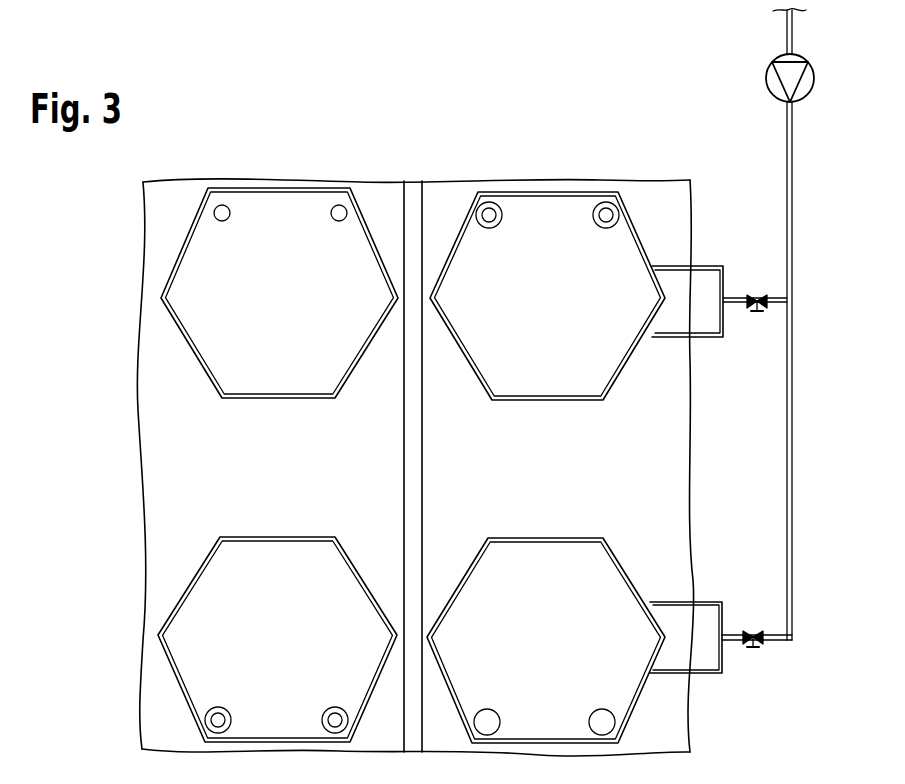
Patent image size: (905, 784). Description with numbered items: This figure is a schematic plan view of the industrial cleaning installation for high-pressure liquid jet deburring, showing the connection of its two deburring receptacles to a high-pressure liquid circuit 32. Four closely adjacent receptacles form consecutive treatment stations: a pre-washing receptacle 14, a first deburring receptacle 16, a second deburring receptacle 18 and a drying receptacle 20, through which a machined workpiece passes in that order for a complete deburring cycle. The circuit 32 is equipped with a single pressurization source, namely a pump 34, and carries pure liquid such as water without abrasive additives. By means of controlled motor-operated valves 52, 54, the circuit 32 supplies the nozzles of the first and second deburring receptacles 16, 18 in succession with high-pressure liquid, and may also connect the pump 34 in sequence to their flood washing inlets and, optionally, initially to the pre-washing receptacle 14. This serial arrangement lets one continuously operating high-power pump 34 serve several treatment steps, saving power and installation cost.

The pre-washing receptacle 14 is at (283, 294).
The first deburring receptacle 16 is at (566, 296).
The second deburring receptacle 18 is at (547, 647).
The drying receptacle 20 is at (284, 634).
The circuit 32 is at (762, 160).
The pump 34 is at (772, 80).
The controlled motor-operated valve 52 is at (743, 306).
The controlled motor-operated valve 54 is at (746, 631).